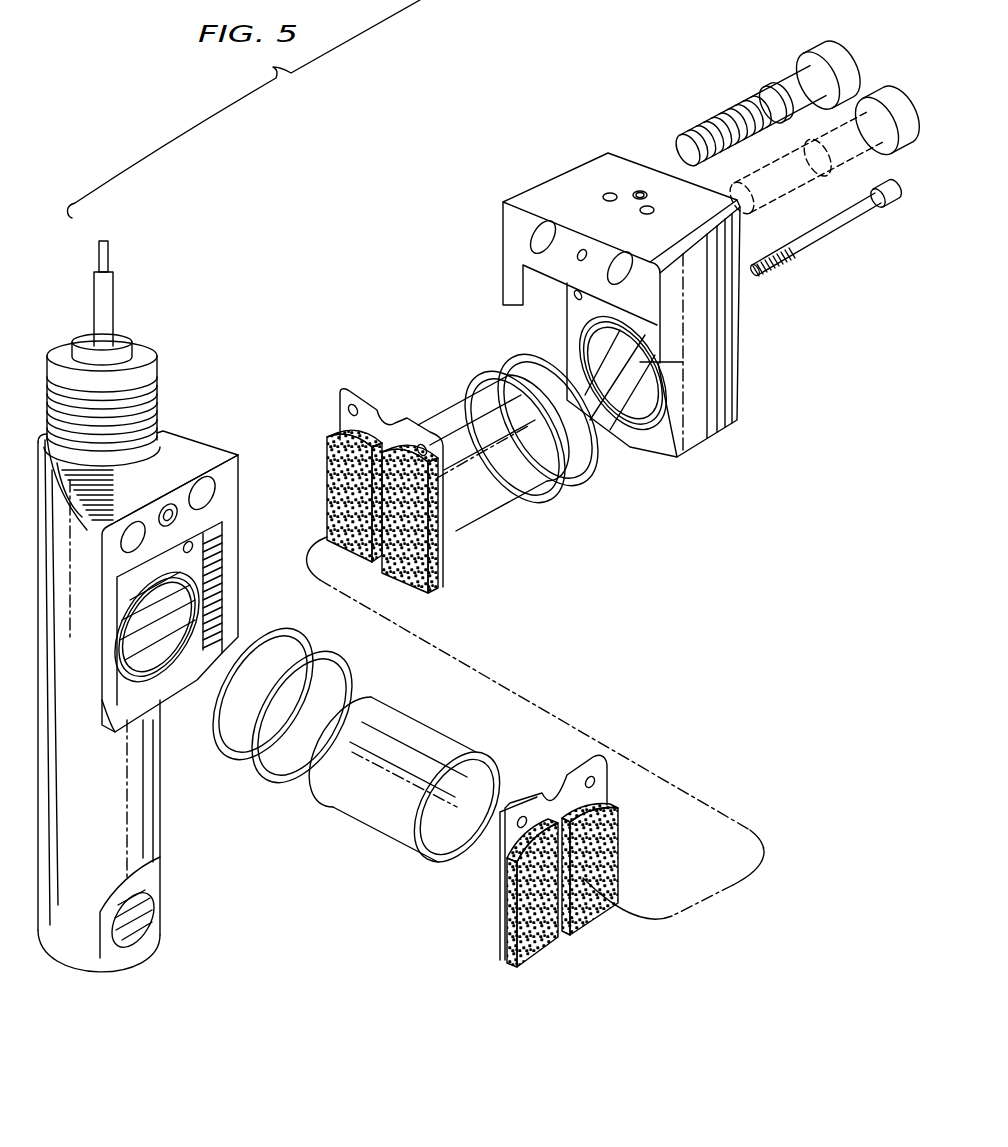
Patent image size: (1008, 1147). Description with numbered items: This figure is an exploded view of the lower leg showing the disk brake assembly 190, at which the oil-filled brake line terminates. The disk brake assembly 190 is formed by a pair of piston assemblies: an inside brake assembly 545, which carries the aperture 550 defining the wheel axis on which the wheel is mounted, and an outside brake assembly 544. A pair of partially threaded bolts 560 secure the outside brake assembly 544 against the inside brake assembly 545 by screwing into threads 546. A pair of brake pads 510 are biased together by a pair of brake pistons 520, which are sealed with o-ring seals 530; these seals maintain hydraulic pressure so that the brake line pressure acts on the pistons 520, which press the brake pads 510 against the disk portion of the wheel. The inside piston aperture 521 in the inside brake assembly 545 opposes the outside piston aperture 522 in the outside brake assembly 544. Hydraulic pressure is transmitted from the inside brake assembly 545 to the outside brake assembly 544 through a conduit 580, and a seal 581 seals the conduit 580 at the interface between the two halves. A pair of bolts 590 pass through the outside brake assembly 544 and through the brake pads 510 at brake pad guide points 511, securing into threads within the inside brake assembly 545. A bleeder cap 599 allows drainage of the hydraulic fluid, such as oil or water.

The disk brake assembly 190 is at (214, 361).
The brake pads 510 is at (415, 580).
The brake pad guide points 511 is at (355, 410).
The brake pistons 520 is at (386, 836).
The inside piston aperture 521 is at (200, 625).
The outside piston aperture 522 is at (648, 407).
The o-ring seals 530 is at (236, 748).
The outside brake assembly 544 is at (707, 424).
The inside brake assembly 545 is at (238, 537).
The threads 546 is at (135, 525).
The aperture 550 is at (135, 912).
The bolts 560 is at (778, 80).
The conduit 580 is at (170, 512).
The seal 581 is at (205, 480).
The bolts 590 is at (854, 206).
The bleeder cap 599 is at (640, 191).